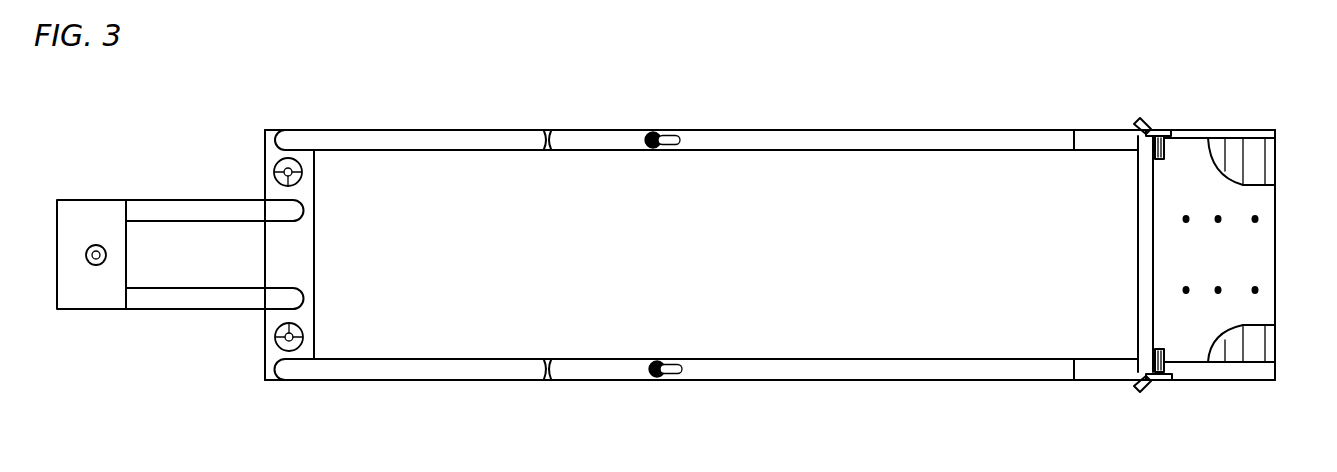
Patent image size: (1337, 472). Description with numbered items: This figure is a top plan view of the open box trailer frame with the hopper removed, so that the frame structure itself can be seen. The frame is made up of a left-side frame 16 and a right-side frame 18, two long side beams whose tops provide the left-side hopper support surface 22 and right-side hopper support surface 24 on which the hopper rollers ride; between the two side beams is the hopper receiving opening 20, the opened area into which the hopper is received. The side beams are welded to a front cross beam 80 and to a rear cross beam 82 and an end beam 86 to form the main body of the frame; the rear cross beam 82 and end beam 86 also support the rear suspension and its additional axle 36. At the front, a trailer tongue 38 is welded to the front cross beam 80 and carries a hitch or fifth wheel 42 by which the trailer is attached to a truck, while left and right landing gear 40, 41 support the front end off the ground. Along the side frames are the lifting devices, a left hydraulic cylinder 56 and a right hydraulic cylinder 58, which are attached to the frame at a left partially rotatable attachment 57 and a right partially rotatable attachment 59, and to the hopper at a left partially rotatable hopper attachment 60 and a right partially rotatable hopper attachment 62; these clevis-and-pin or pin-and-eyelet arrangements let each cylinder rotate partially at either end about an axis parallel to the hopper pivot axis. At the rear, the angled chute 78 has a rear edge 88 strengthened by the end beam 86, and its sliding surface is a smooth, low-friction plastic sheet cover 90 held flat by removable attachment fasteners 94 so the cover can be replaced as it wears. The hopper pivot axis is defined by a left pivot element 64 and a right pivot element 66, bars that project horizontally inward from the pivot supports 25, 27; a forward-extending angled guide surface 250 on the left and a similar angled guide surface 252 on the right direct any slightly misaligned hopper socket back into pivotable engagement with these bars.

The left-side frame 16 is at (930, 380).
The right-side frame 18 is at (930, 130).
The hopper receiving opening 20 is at (471, 314).
The left-side hopper support surface 22 is at (1006, 372).
The right-side hopper support surface 24 is at (1003, 137).
The pivot support 25 is at (1165, 381).
The pivot support 27 is at (1165, 132).
The additional axle 36 is at (1256, 358).
The trailer tongue 38 is at (87, 310).
The landing gear 40 is at (276, 337).
The landing gear 41 is at (275, 172).
The hitch 42 is at (106, 252).
The hydraulic cylinder 56 is at (628, 374).
The left partially rotatable attachment 57 is at (549, 380).
The hydraulic cylinder 58 is at (578, 136).
The right partially rotatable attachment 59 is at (548, 130).
The left partially rotatable hopper attachment 60 is at (676, 378).
The right partially rotatable hopper attachment 62 is at (670, 135).
The left pivot element 64 is at (1168, 352).
The right pivot element 66 is at (1164, 152).
The chute 78 is at (1282, 168).
The front cross beam 80 is at (268, 131).
The rear cross beam 82 is at (1140, 210).
The end beam 86 is at (1255, 148).
The rear edge 88 is at (1277, 213).
The plastic sheet cover 90 is at (1260, 256).
The attachment fasteners 94 is at (1258, 289).
The angled guide surface 250 is at (1143, 390).
The angled guide surface 252 is at (1146, 120).